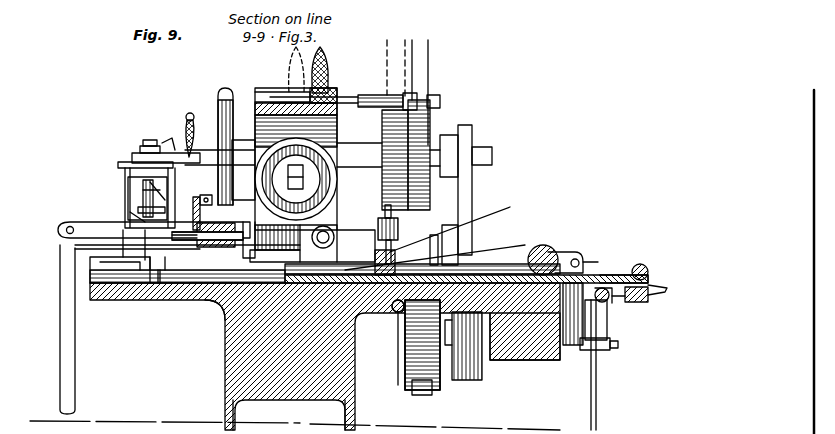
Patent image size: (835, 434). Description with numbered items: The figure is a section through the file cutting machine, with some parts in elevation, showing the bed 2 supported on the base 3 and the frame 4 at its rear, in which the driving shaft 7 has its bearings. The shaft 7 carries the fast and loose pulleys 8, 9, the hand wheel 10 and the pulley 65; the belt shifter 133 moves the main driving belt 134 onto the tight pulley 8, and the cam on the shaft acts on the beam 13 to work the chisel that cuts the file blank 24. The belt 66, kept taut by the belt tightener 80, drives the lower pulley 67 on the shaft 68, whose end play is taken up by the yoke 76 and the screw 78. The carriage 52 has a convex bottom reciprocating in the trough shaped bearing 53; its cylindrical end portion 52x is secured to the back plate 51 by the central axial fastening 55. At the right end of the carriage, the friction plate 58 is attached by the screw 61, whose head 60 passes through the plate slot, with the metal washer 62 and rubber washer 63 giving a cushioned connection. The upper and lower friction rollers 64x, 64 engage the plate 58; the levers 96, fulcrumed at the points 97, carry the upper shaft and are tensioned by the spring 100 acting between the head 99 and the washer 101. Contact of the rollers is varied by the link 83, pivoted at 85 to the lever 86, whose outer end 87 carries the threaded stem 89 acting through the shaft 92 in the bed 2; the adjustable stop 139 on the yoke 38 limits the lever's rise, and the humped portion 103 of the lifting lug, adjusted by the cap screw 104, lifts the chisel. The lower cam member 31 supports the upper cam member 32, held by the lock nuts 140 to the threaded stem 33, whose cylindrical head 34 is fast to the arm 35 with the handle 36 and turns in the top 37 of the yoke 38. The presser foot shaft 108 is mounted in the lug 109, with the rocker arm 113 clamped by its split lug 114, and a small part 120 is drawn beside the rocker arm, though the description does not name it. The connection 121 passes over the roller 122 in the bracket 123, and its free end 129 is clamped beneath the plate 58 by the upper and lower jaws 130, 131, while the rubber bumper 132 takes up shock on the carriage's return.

The bed 2 is at (325, 356).
The base 3 is at (228, 400).
The frame 4 is at (356, 232).
The driving shaft 7 is at (352, 176).
The fast pulley 8 is at (382, 127).
The loose pulley 9 is at (432, 122).
The hand wheel 10 is at (234, 90).
The beam 13 is at (292, 165).
The file blank 24 is at (205, 305).
The lower cam member 31 is at (75, 246).
The upper cam member 32 is at (130, 212).
The threaded stem 33 is at (143, 190).
The cylindrical head 34 is at (150, 143).
The arm 35 is at (163, 134).
The handle 36 is at (186, 125).
The top of yoke 37 is at (148, 180).
The yoke 38 is at (178, 176).
The back plate 51 is at (156, 286).
The carriage 52 is at (250, 290).
The end portion of carriage 52x is at (162, 285).
The trough shaped bearing 53 is at (145, 268).
The central axial fastening 55 is at (148, 285).
The friction plate 58 is at (598, 283).
The head of screw 60 is at (435, 234).
The screw 61 is at (422, 286).
The metal washer 62 is at (383, 278).
The rubber washer 63 is at (466, 291).
The lower friction roller 64 is at (590, 313).
The upper friction roller 64x is at (578, 240).
The pulley 65 is at (480, 135).
The belt 66 is at (472, 190).
The lower pulley 67 is at (470, 380).
The shaft 68 is at (510, 360).
The yoke 76 is at (603, 352).
The screw 78 is at (618, 345).
The belt tightener 80 is at (463, 246).
The link 83 is at (68, 402).
The pivotal connection 85 is at (66, 232).
The lever 86 is at (123, 230).
The outer end of lever 87 is at (378, 206).
The threaded stem 89 is at (395, 232).
The shaft 92 is at (396, 330).
The levers 96 is at (538, 248).
The fulcrum point 97 is at (603, 244).
The head 99 is at (415, 392).
The spring 100 is at (408, 360).
The washer 101 is at (395, 318).
The humped portion 103 is at (277, 228).
The cap screw 104 is at (272, 259).
The shaft 108 is at (197, 232).
The lug 109 is at (241, 232).
The rocker arm 113 is at (193, 212).
The split lug 114 is at (210, 240).
The stop 120 is at (200, 198).
The connection 121 is at (598, 402).
The roller 122 is at (583, 308).
The bracket 123 is at (590, 322).
The free end of connection 129 is at (665, 289).
The upper jaw 130 is at (648, 268).
The lower jaw 131 is at (648, 298).
The rubber bumper 132 is at (648, 290).
The belt shifter 133 is at (372, 96).
The main driving belt 134 is at (420, 66).
The adjustable stop 139 is at (145, 234).
The lock nuts 140 is at (150, 182).